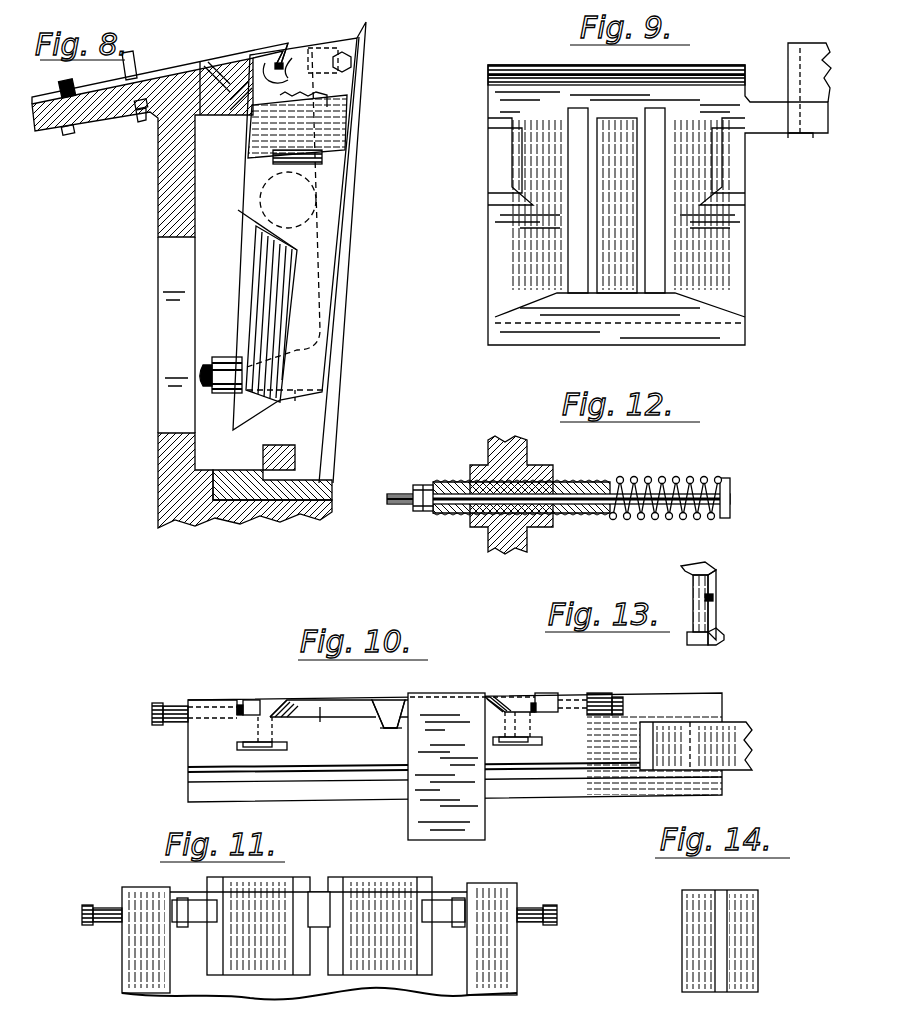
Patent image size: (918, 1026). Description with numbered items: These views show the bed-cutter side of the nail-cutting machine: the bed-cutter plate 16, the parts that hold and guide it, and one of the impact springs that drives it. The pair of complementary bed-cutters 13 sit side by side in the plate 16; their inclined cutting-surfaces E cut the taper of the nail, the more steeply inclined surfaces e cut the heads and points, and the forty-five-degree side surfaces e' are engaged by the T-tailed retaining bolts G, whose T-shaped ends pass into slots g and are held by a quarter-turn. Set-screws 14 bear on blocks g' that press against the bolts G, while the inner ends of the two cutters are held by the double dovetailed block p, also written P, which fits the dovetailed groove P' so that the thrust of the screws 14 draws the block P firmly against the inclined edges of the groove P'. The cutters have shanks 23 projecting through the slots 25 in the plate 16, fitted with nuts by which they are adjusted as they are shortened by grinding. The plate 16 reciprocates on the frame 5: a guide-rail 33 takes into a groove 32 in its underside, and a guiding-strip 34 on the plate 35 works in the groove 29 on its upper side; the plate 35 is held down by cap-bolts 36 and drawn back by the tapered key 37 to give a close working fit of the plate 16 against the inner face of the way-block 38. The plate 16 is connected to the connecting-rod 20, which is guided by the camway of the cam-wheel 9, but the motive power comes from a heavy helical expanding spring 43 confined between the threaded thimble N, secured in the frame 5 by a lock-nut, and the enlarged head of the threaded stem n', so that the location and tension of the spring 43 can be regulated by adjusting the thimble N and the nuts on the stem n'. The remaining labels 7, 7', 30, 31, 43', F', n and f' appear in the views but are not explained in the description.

In FIG. 8, the frame 5 is at (163, 177).
In FIG. 12, the frame 5 is at (522, 462).
In FIG. 8, the carriage plate 7 is at (295, 234).
In FIG. 8, the carriage cross-piece 7' is at (297, 129).
In FIG. 8, the cam-wheel 9 is at (216, 393).
In FIG. 11, the cam-wheel 9 is at (108, 905).
In FIG. 10, the bed-cutters 13 is at (500, 703).
In FIG. 11, the bed-cutters 13 is at (257, 877).
In FIG. 10, the set-screws 14 is at (158, 703).
In FIG. 11, the set-screws 14 is at (85, 903).
In FIG. 8, the bed-cutter plate 16 is at (315, 427).
In FIG. 9, the bed-cutter plate 16 is at (738, 268).
In FIG. 10, the bed-cutter plate 16 is at (188, 750).
In FIG. 11, the bed-cutter plate 16 is at (455, 988).
In FIG. 9, the connecting-rod 20 is at (790, 55).
In FIG. 10, the connecting-rod 20 is at (733, 728).
In FIG. 8, the shanks 23 is at (277, 325).
In FIG. 9, the slots 25 is at (585, 192).
In FIG. 8, the groove 29 is at (292, 58).
In FIG. 10, the groove 29 is at (198, 778).
In FIG. 8, the hook 30 is at (289, 79).
In FIG. 10, the hook 30 is at (195, 795).
In FIG. 8, the bolt 31 is at (352, 38).
In FIG. 10, the bolt 31 is at (287, 745).
In FIG. 8, the groove 32 is at (278, 457).
In FIG. 9, the groove 32 is at (732, 335).
In FIG. 8, the guide-rail 33 is at (265, 482).
In FIG. 8, the guiding-strip 34 is at (278, 63).
In FIG. 8, the plate 35 is at (138, 110).
In FIG. 8, the cap-bolts 36 is at (160, 89).
In FIG. 8, the tapered key 37 is at (132, 52).
In FIG. 8, the way-block 38 is at (229, 115).
In FIG. 12, the helical expanding spring 43 is at (666, 488).
In FIG. 8, the opening 43' is at (325, 200).
In FIG. 10, the inclined cutting-surfaces E is at (317, 702).
In FIG. 11, the inclined cutting-surfaces E is at (395, 928).
In FIG. 10, the cutting-surfaces e is at (391, 683).
In FIG. 11, the cutting-surfaces e is at (328, 864).
In FIG. 10, the inclined surfaces e' is at (395, 695).
In FIG. 10, the cross block F' is at (446, 766).
In FIG. 13, the cutter-retaining bolts G is at (714, 574).
In FIG. 10, the cutter-retaining bolts G is at (270, 707).
In FIG. 11, the cutter-retaining bolts G is at (203, 912).
In FIG. 10, the slots g is at (400, 693).
In FIG. 10, the blocks g' is at (412, 690).
In FIG. 11, the blocks g' is at (319, 924).
In FIG. 10, the block P is at (419, 704).
In FIG. 11, the block P is at (305, 880).
In FIG. 10, the groove P' is at (386, 732).
In FIG. 14, the double dovetailed block p is at (762, 913).
In FIG. 12, the threaded thimble N is at (583, 513).
In FIG. 9, the lug n is at (825, 76).
In FIG. 12, the threaded stem n' is at (378, 501).
In FIG. 11, the frame part f' is at (70, 983).